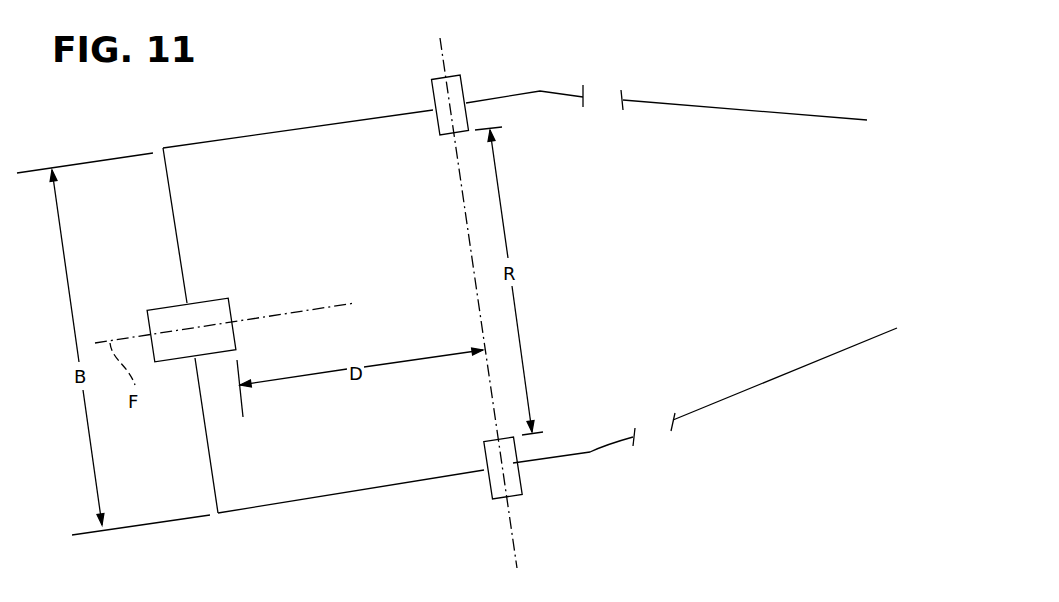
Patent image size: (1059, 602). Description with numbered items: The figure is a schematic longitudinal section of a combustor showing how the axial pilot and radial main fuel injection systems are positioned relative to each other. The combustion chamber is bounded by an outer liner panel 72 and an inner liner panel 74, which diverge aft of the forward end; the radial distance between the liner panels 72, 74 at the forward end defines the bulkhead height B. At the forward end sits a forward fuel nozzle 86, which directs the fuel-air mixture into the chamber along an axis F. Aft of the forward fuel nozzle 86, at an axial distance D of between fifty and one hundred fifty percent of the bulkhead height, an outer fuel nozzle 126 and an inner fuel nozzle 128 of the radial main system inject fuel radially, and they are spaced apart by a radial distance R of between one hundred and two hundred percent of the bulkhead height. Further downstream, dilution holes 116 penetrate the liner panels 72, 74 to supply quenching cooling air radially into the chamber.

The liner panel 72 is at (318, 123).
The liner panel 74 is at (346, 497).
The forward fuel nozzle 86 is at (163, 308).
The dilution hole 116 is at (604, 95).
The outer fuel nozzle 126 is at (447, 78).
The inner fuel nozzle 128 is at (519, 478).